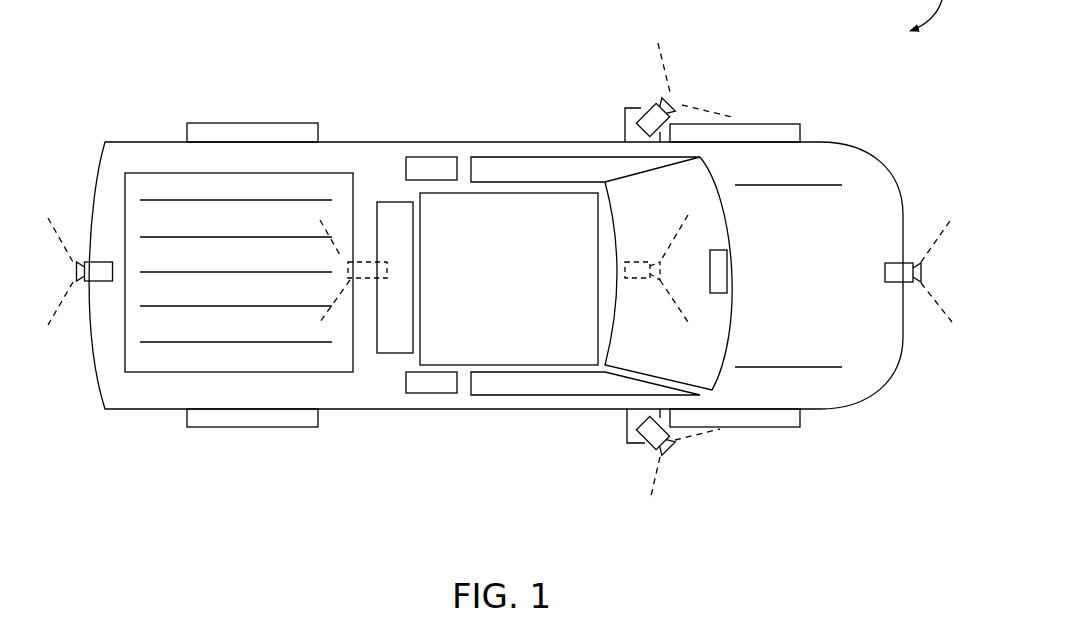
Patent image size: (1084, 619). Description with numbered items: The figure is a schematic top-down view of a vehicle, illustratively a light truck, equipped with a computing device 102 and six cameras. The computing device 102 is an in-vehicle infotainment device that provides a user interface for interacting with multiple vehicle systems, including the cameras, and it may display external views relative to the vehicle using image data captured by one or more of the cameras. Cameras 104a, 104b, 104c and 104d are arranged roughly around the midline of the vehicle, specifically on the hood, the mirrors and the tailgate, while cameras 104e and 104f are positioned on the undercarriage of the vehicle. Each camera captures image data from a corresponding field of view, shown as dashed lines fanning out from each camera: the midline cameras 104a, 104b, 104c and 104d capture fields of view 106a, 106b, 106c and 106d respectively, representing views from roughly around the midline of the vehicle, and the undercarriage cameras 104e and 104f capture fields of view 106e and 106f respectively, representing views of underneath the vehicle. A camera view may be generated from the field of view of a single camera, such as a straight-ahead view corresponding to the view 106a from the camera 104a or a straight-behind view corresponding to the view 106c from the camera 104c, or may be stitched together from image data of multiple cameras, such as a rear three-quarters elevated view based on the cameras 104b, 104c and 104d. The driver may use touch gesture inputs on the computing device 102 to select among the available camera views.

The computing device 102 is at (715, 268).
The camera 104a is at (893, 262).
The camera 104b is at (650, 118).
The camera 104c is at (100, 262).
The camera 104d is at (648, 440).
The camera 104e is at (637, 262).
The camera 104f is at (379, 280).
The field of view 106a is at (945, 302).
The field of view 106b is at (674, 83).
The field of view 106c is at (55, 296).
The field of view 106d is at (665, 479).
The field of view 106e is at (677, 286).
The field of view 106f is at (339, 257).